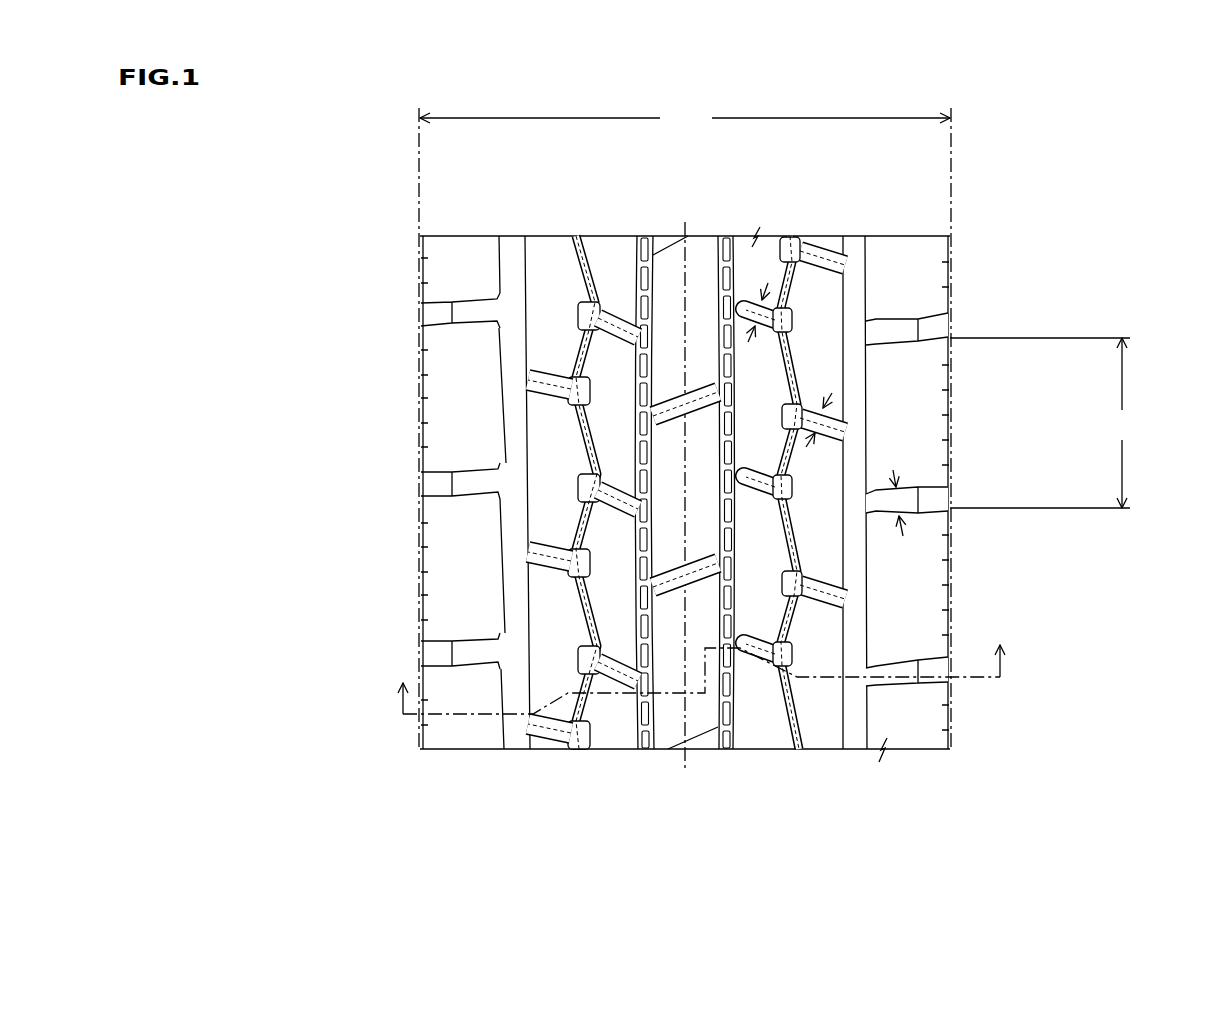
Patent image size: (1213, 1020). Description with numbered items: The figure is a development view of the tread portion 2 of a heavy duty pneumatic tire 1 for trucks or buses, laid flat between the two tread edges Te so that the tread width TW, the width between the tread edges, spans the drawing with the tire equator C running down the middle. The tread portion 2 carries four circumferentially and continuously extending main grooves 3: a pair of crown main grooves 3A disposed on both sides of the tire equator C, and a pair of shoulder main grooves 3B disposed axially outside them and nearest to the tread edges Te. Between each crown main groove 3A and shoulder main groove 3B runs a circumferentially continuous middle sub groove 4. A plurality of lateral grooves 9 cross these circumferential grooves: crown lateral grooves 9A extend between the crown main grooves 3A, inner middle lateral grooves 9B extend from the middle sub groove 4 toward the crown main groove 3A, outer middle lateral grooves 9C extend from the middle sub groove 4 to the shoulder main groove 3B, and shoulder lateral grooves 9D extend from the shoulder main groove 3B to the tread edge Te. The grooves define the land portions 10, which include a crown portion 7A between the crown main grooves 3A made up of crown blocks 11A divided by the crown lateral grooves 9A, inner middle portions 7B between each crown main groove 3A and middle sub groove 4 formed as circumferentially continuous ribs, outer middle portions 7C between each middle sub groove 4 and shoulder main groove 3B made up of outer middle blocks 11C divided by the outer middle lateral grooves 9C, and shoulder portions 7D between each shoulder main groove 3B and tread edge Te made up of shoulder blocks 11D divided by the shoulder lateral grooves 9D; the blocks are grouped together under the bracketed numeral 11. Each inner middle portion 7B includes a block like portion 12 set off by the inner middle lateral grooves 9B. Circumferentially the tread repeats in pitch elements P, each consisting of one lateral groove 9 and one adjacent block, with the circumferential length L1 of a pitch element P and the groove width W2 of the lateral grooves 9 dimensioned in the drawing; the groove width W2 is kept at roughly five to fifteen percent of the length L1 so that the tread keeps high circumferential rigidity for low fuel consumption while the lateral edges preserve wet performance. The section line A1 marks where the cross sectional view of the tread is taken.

The heavy duty pneumatic tire 1 is at (478, 230).
The tread portion 2 is at (888, 230).
The main grooves 3 is at (855, 168).
The crown main groove 3A is at (646, 240).
The shoulder main groove 3B is at (521, 243).
The middle sub groove 4 is at (578, 240).
The crown portion 7A is at (667, 735).
The inner middle portion 7B is at (615, 738).
The outer middle portion 7C is at (545, 740).
The shoulder portion 7D is at (475, 737).
The lateral grooves 9 is at (323, 525).
The crown lateral groove 9A is at (672, 570).
The inner middle lateral groove 9B is at (613, 655).
The outer middle lateral groove 9C is at (548, 568).
The shoulder lateral groove 9D is at (468, 640).
The land portions 10 is at (275, 353).
The second lateral groove main portion 11 is at (325, 295).
The crown block 11A is at (673, 353).
The outer middle block 11C is at (552, 420).
The shoulder block 11D is at (458, 415).
The block like portion 12 is at (613, 427).
The tread edge Te is at (420, 268).
The tire equator C is at (686, 482).
The tread width TW is at (685, 119).
The groove width W2 is at (777, 321).
The circumferential length L1 is at (1043, 423).
The pitch element P is at (1122, 465).
The line A1- A1 is at (701, 676).